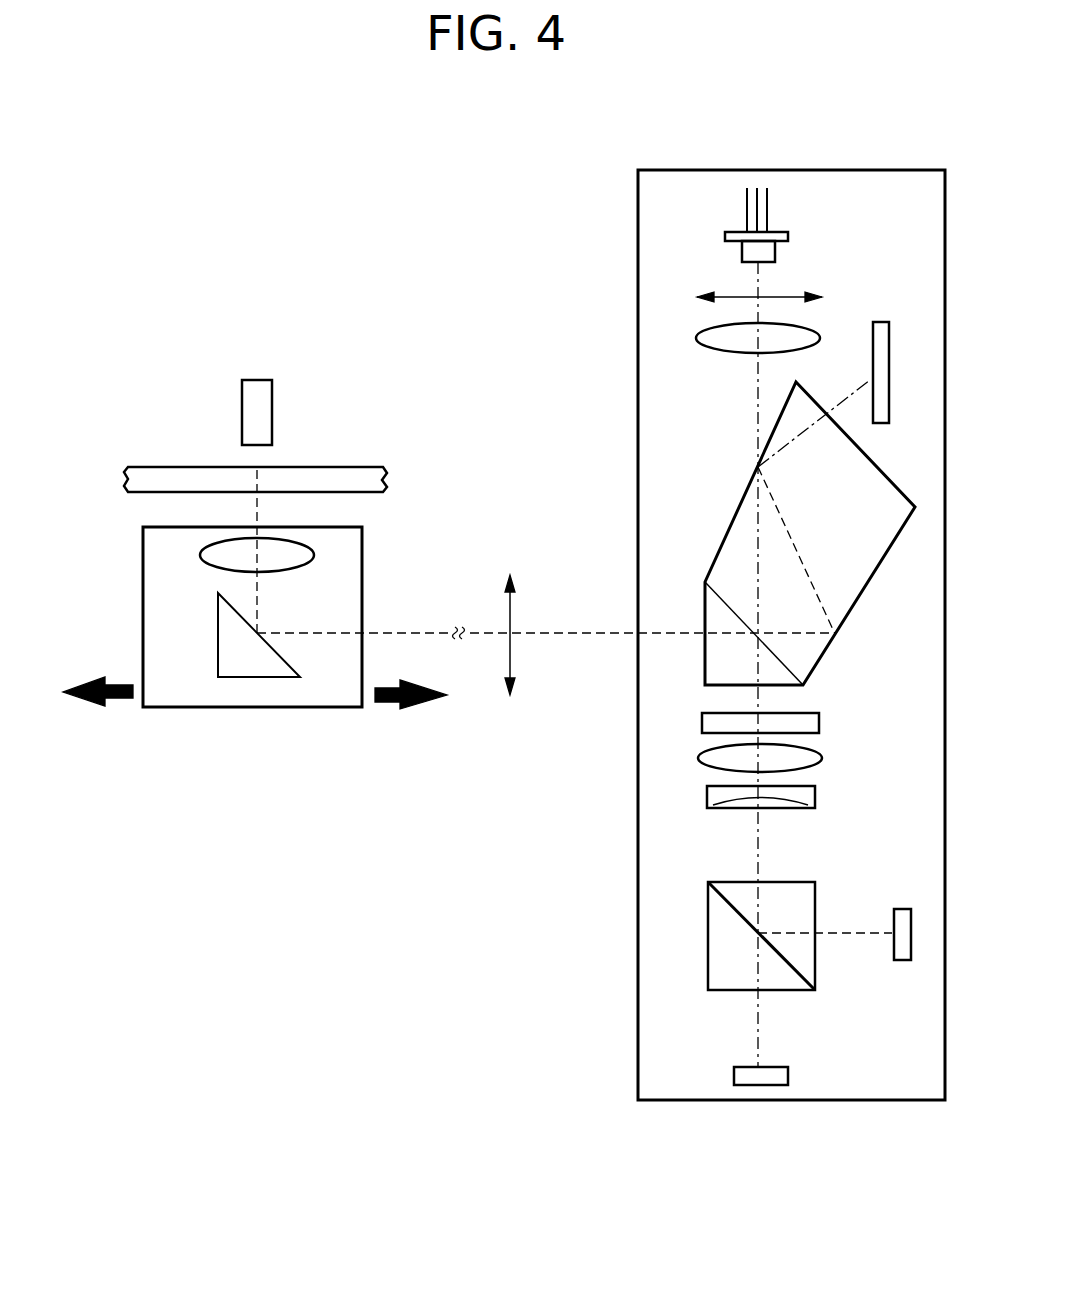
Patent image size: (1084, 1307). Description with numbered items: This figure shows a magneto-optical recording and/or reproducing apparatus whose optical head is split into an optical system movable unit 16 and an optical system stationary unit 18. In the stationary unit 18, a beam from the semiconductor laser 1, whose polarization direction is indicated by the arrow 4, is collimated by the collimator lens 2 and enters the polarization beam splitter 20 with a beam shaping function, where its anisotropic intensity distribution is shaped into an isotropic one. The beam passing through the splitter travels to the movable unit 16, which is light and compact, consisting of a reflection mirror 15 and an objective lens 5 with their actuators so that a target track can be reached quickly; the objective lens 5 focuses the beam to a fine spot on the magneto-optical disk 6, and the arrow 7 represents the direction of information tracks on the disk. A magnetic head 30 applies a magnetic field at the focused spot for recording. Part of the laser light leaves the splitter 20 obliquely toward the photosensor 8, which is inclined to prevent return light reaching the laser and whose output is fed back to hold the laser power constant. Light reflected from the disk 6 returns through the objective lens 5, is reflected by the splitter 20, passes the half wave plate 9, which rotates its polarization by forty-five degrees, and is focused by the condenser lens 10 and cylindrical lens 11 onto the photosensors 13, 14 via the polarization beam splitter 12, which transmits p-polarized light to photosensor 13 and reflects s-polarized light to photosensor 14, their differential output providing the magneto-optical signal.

The semiconductor laser 1 is at (788, 238).
The collimator lens 2 is at (710, 347).
The arrow 4 is at (730, 296).
The objective lens 5 is at (290, 570).
The magneto-optical disk 6 is at (335, 467).
The arrow 7 is at (512, 660).
The photosensor 8 is at (887, 322).
The half wave plate 9 is at (819, 717).
The condenser lens 10 is at (822, 757).
The cylindrical lens 11 is at (815, 790).
The polarization beam splitter 12 is at (707, 930).
The photosensor 13 is at (777, 1065).
The photosensor 14 is at (902, 960).
The reflection mirror 15 is at (218, 638).
The optical system movable unit 16 is at (313, 708).
The optical system stationary unit 18 is at (878, 1100).
The polarization beam splitter with beam shaping function 20 is at (852, 612).
The magnetic head 30 is at (263, 380).